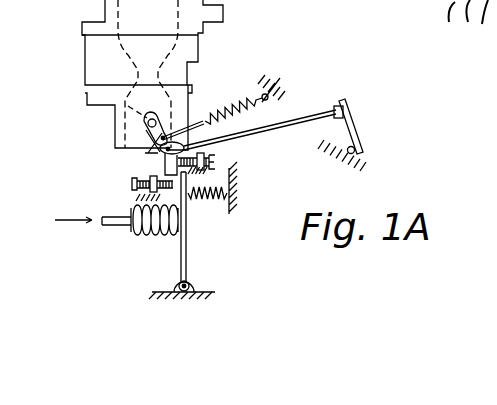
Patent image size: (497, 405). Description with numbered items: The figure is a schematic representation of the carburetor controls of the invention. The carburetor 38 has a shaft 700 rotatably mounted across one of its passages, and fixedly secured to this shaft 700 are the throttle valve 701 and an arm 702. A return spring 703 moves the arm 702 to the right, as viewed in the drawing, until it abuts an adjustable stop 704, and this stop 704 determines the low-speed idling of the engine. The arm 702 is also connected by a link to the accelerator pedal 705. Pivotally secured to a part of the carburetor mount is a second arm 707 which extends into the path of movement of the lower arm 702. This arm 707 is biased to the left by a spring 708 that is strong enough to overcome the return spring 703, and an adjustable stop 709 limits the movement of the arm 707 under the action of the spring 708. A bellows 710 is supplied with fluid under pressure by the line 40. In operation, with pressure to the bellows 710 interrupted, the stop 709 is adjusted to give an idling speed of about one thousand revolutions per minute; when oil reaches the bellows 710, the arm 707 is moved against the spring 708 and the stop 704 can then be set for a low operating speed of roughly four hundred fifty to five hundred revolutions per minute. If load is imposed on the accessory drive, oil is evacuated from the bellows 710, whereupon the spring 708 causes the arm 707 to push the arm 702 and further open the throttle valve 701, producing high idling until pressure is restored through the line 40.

The carburetor 38 is at (109, 145).
The line 40 is at (110, 217).
The shaft 700 is at (156, 119).
The throttle valve 701 is at (130, 111).
The arm 702 is at (148, 153).
The return spring 703 is at (262, 96).
The adjustable stop 704 is at (216, 161).
The accelerator pedal 705 is at (356, 133).
The arm 707 is at (187, 268).
The spring 708 is at (213, 202).
The adjustable stop 709 is at (131, 186).
The bellows 710 is at (160, 236).